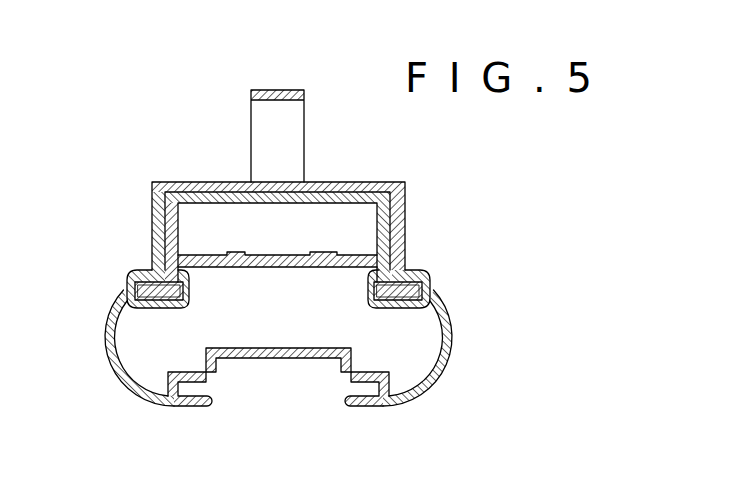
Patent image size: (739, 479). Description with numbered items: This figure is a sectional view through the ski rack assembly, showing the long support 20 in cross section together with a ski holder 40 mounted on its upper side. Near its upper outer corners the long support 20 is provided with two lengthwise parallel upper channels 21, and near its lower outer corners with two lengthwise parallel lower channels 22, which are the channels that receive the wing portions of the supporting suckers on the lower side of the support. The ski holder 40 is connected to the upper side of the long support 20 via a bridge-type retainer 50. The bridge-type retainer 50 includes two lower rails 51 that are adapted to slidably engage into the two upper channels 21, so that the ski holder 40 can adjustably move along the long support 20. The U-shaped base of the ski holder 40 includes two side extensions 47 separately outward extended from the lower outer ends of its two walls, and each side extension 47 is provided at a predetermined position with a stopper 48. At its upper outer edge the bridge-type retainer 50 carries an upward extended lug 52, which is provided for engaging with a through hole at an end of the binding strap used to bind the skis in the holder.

The long support 20 is at (451, 326).
The upper channel 21 is at (143, 273).
The lower channel 22 is at (355, 388).
The ski holder 40 is at (223, 153).
The side extension 47 is at (349, 196).
The stopper 48 is at (279, 202).
The bridge-type retainer 50 is at (405, 199).
The lower rail 51 is at (133, 289).
The lug 52 is at (284, 93).